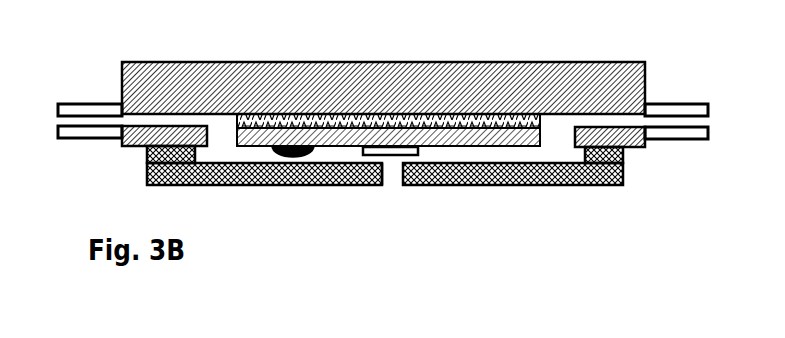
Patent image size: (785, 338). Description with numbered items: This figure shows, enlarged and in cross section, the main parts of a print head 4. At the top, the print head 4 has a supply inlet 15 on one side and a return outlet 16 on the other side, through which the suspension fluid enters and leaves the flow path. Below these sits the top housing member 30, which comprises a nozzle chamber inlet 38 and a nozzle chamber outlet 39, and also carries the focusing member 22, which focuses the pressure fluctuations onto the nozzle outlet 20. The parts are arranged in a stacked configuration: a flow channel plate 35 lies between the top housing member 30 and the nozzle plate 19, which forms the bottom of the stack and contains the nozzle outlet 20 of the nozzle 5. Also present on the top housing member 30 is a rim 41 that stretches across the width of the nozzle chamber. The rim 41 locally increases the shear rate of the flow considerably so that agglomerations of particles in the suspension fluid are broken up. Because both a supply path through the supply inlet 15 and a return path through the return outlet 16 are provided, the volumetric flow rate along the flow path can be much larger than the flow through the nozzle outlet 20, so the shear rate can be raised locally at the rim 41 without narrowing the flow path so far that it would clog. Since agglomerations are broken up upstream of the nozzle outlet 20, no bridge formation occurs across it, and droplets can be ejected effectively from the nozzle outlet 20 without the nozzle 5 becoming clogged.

The print head 4 is at (445, 62).
The nozzle 5 is at (440, 198).
The supply inlet 15 is at (107, 103).
The return outlet 16 is at (657, 104).
The nozzle plate 19 is at (497, 186).
The nozzle outlet 20 is at (386, 181).
The focusing member 22 is at (393, 156).
The top housing member 30 is at (238, 62).
The flow channel plate 35 is at (147, 152).
The nozzle chamber inlet 38 is at (220, 147).
The nozzle chamber outlet 39 is at (560, 147).
The rim 41 is at (273, 152).